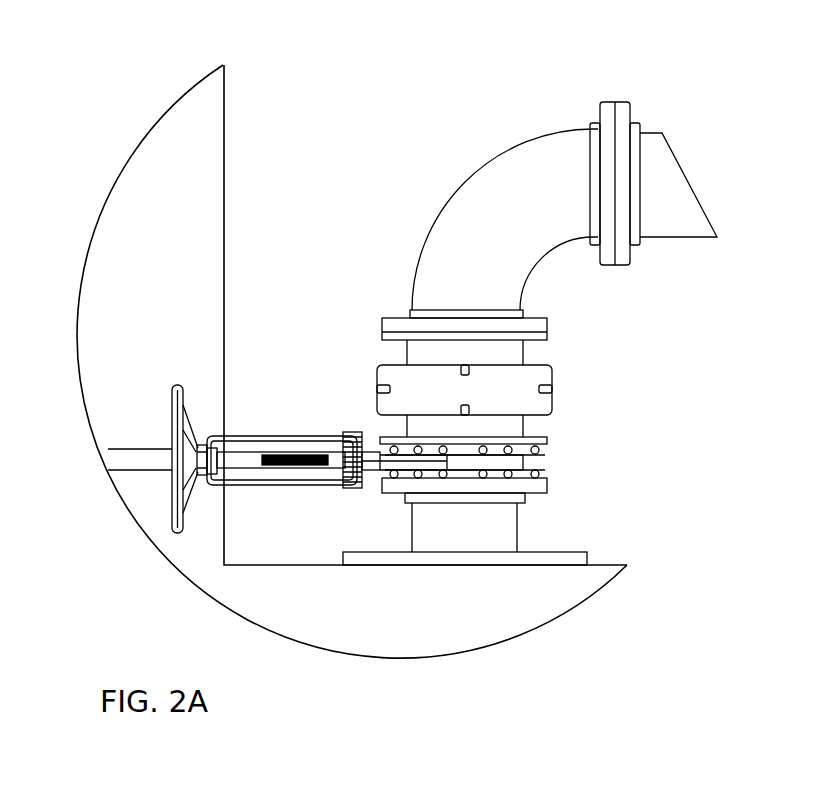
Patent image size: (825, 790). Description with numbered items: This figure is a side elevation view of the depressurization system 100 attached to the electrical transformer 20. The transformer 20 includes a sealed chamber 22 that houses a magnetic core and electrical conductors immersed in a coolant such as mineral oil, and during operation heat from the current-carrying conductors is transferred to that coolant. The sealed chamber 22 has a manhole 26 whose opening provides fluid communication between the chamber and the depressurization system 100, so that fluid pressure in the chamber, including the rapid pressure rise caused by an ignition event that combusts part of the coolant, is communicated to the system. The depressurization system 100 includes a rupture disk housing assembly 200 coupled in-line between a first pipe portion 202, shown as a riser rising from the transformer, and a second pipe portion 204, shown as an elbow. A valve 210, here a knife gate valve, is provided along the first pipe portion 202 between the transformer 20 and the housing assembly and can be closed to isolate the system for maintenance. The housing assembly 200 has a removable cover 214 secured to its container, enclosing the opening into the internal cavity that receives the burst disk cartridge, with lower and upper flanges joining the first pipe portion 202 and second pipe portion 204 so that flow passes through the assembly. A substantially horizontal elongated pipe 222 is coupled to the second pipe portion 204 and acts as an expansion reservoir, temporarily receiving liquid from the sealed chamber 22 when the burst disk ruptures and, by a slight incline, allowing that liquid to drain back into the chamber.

The depressurization system 100 is at (423, 153).
The rupture disk housing assembly 200 is at (374, 368).
The first pipe portion 202 is at (515, 527).
The second pipe portion 204 is at (560, 153).
The valve 210 is at (265, 434).
The removable cover 214 is at (377, 407).
The elongated pipe 222 is at (670, 227).
The electrical transformer 20 is at (562, 616).
The sealed chamber 22 is at (428, 628).
The manhole 26 is at (583, 552).